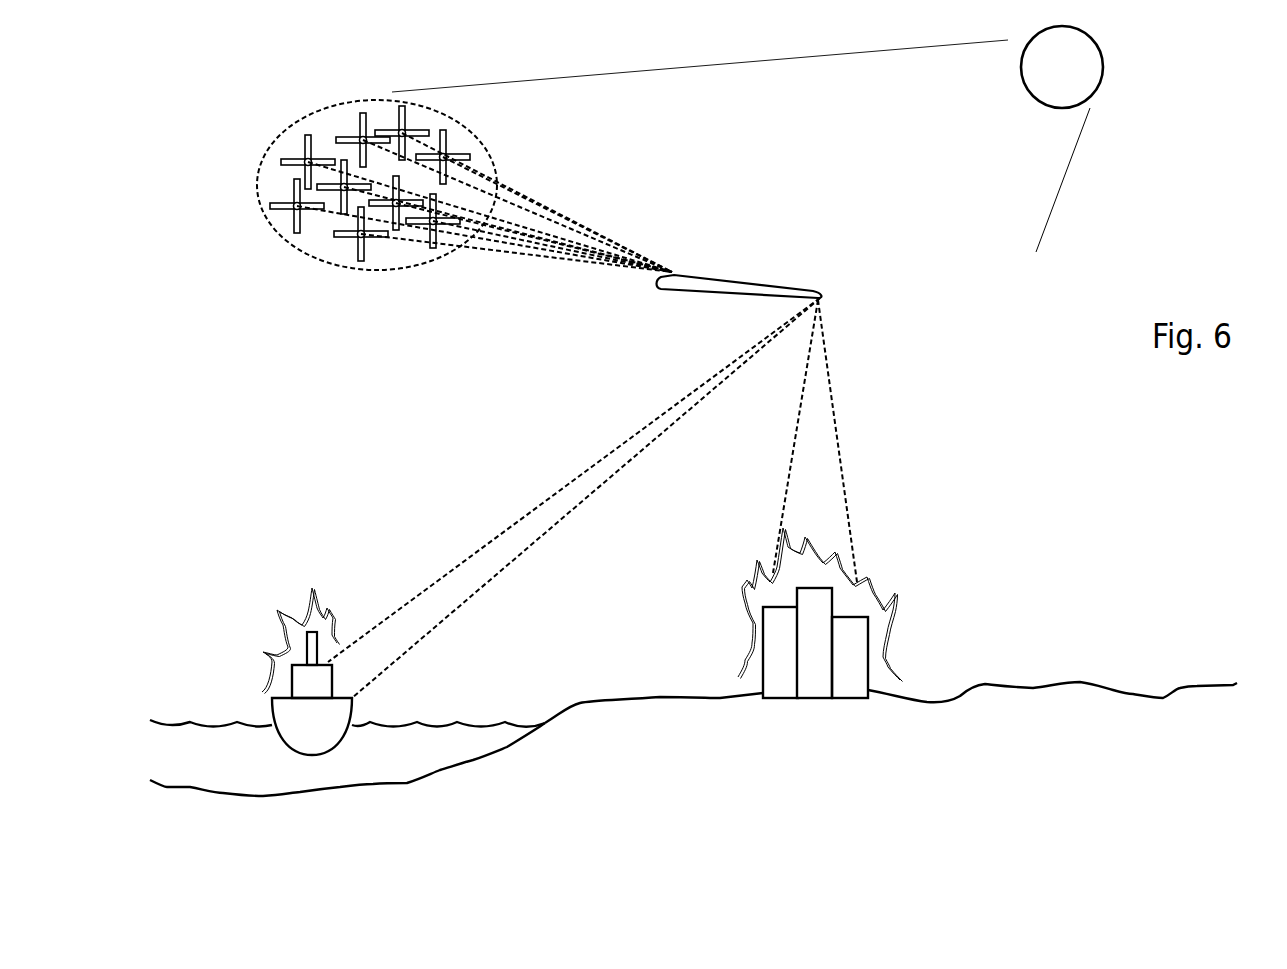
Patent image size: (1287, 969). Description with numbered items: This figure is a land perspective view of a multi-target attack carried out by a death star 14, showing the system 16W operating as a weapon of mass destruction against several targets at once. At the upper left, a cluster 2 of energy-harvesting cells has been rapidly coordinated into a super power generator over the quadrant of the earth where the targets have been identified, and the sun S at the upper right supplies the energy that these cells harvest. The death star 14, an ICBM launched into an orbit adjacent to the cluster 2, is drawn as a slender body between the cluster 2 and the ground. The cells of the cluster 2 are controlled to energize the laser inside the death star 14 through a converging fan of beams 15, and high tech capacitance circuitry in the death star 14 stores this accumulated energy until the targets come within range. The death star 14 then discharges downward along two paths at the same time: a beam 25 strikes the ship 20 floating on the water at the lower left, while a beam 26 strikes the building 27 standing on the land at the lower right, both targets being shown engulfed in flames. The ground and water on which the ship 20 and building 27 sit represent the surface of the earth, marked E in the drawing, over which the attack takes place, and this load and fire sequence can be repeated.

The cluster 2 is at (301, 120).
The beams 15 is at (618, 243).
The death star 14 is at (752, 280).
The system 16W is at (921, 61).
The sun S is at (1082, 70).
The beam 25 is at (502, 535).
The beam 26 is at (850, 522).
The ship 20 is at (352, 713).
The building 27 is at (862, 652).
The earth E is at (939, 774).